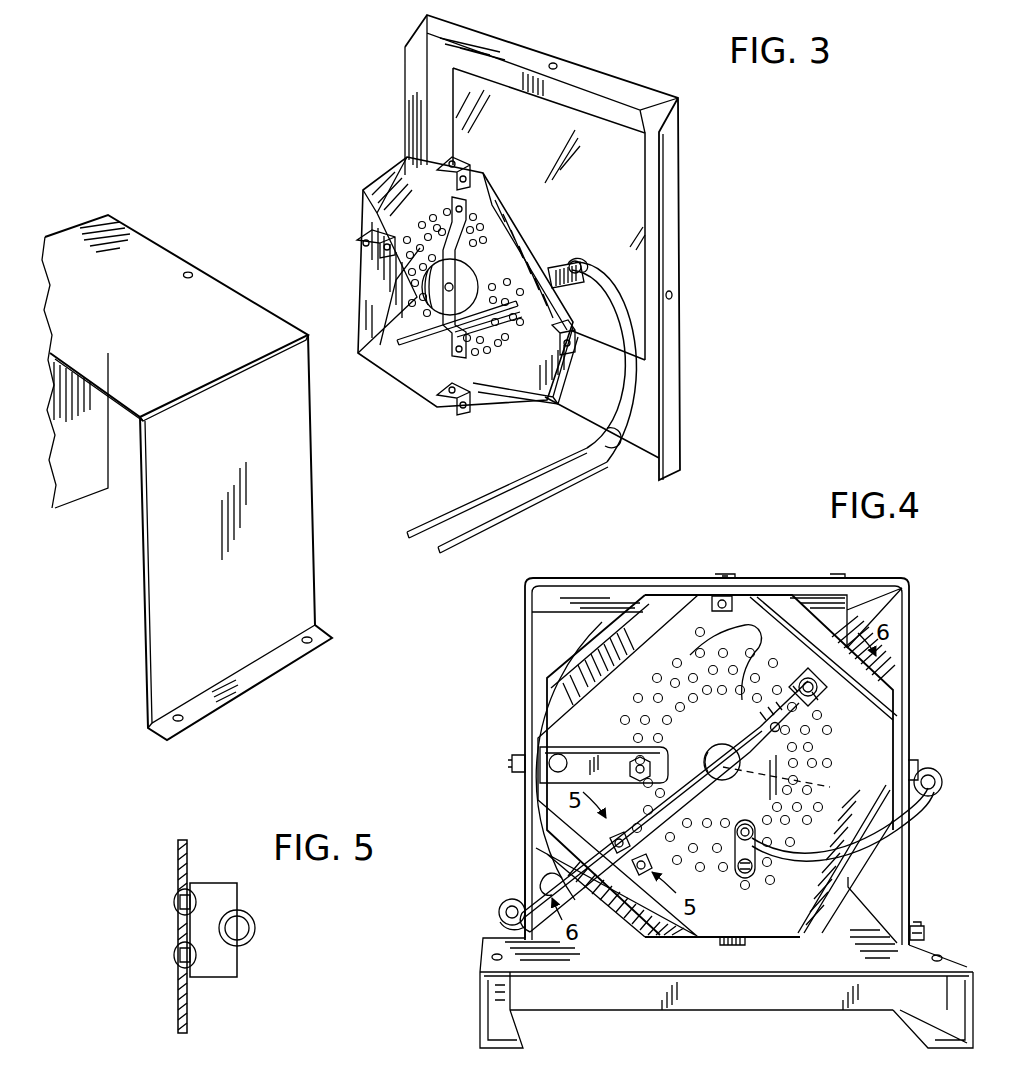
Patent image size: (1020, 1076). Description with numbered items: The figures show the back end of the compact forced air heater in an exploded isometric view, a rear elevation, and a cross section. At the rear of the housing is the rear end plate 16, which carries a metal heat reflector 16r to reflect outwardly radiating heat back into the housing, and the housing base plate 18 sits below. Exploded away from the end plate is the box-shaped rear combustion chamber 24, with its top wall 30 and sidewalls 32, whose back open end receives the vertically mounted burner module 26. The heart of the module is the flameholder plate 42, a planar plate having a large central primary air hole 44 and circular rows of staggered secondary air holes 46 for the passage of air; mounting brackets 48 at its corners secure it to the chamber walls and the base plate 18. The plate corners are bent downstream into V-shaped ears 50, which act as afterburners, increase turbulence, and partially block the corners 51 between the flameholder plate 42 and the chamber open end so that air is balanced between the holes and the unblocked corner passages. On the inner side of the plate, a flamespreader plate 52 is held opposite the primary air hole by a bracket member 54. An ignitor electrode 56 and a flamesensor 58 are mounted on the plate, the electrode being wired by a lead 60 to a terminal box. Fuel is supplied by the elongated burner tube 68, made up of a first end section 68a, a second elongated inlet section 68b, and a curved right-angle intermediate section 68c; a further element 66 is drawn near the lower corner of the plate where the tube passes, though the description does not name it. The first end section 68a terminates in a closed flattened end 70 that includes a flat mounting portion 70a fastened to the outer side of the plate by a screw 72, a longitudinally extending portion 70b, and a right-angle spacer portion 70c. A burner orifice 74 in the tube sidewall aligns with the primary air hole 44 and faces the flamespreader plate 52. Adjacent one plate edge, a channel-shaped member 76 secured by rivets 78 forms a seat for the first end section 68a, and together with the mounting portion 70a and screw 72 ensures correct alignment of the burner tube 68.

In FIG. 3, the rear end plate 16 is at (680, 205).
In FIG. 3, the metal heat reflector 16r is at (628, 160).
In FIG. 4, the base plate 18 is at (754, 1000).
In FIG. 3, the rear combustion chamber 24 is at (88, 212).
In FIG. 4, the rear combustion chamber 24 is at (898, 573).
In FIG. 3, the burner module 26 is at (378, 170).
In FIG. 3, the top wall 30 is at (155, 265).
In FIG. 4, the top wall 30 is at (832, 578).
In FIG. 3, the sidewalls 32 is at (75, 488).
In FIG. 4, the sidewalls 32 is at (525, 672).
In FIG. 3, the flameholder plate 42 is at (458, 398).
In FIG. 4, the flameholder plate 42 is at (746, 605).
In FIG. 5, the flameholder plate 42 is at (187, 1013).
In FIG. 3, the central primary air hole 44 is at (450, 287).
In FIG. 4, the central primary air hole 44 is at (722, 748).
In FIG. 3, the secondary air holes 46 is at (445, 210).
In FIG. 4, the secondary air holes 46 is at (700, 655).
In FIG. 3, the mounting brackets 48 is at (360, 240).
In FIG. 4, the mounting brackets 48 is at (720, 580).
In FIG. 3, the ears 50 is at (410, 150).
In FIG. 4, the ears 50 is at (553, 710).
In FIG. 4, the corners 51 is at (538, 628).
In FIG. 3, the flamespreader plate 52 is at (422, 283).
In FIG. 3, the bracket member 54 is at (447, 402).
In FIG. 3, the ignitor electrode 56 is at (402, 348).
In FIG. 4, the ignitor electrode 56 is at (755, 846).
In FIG. 3, the flamesensor 58 is at (500, 388).
In FIG. 4, the flamesensor 58 is at (620, 770).
In FIG. 4, the lead 60 is at (930, 800).
In FIG. 4, the strain relief 66 is at (547, 875).
In FIG. 3, the elongated burner tube 68 is at (562, 488).
In FIG. 4, the elongated burner tube 68 is at (550, 925).
In FIG. 3, the first end section 68a is at (575, 342).
In FIG. 4, the first end section 68a is at (742, 812).
In FIG. 5, the first end section 68a is at (257, 927).
In FIG. 3, the second elongated inlet section 68b is at (460, 540).
In FIG. 4, the second elongated inlet section 68b is at (505, 915).
In FIG. 3, the curved right-angle intermediate tube section 68c is at (606, 432).
In FIG. 4, the curved right-angle intermediate tube section 68c is at (502, 918).
In FIG. 4, the closed flattened end 70 is at (722, 748).
In FIG. 4, the flat mounting portion 70a is at (820, 698).
In FIG. 4, the longitudinally extending portion 70b is at (775, 727).
In FIG. 4, the right-angle spacer portion 70c is at (797, 683).
In FIG. 4, the screw 72 is at (820, 688).
In FIG. 4, the burner orifice 74 is at (814, 788).
In FIG. 4, the channel-shaped member 76 is at (632, 878).
In FIG. 5, the channel-shaped member 76 is at (227, 962).
In FIG. 5, the rivets 78 is at (178, 902).